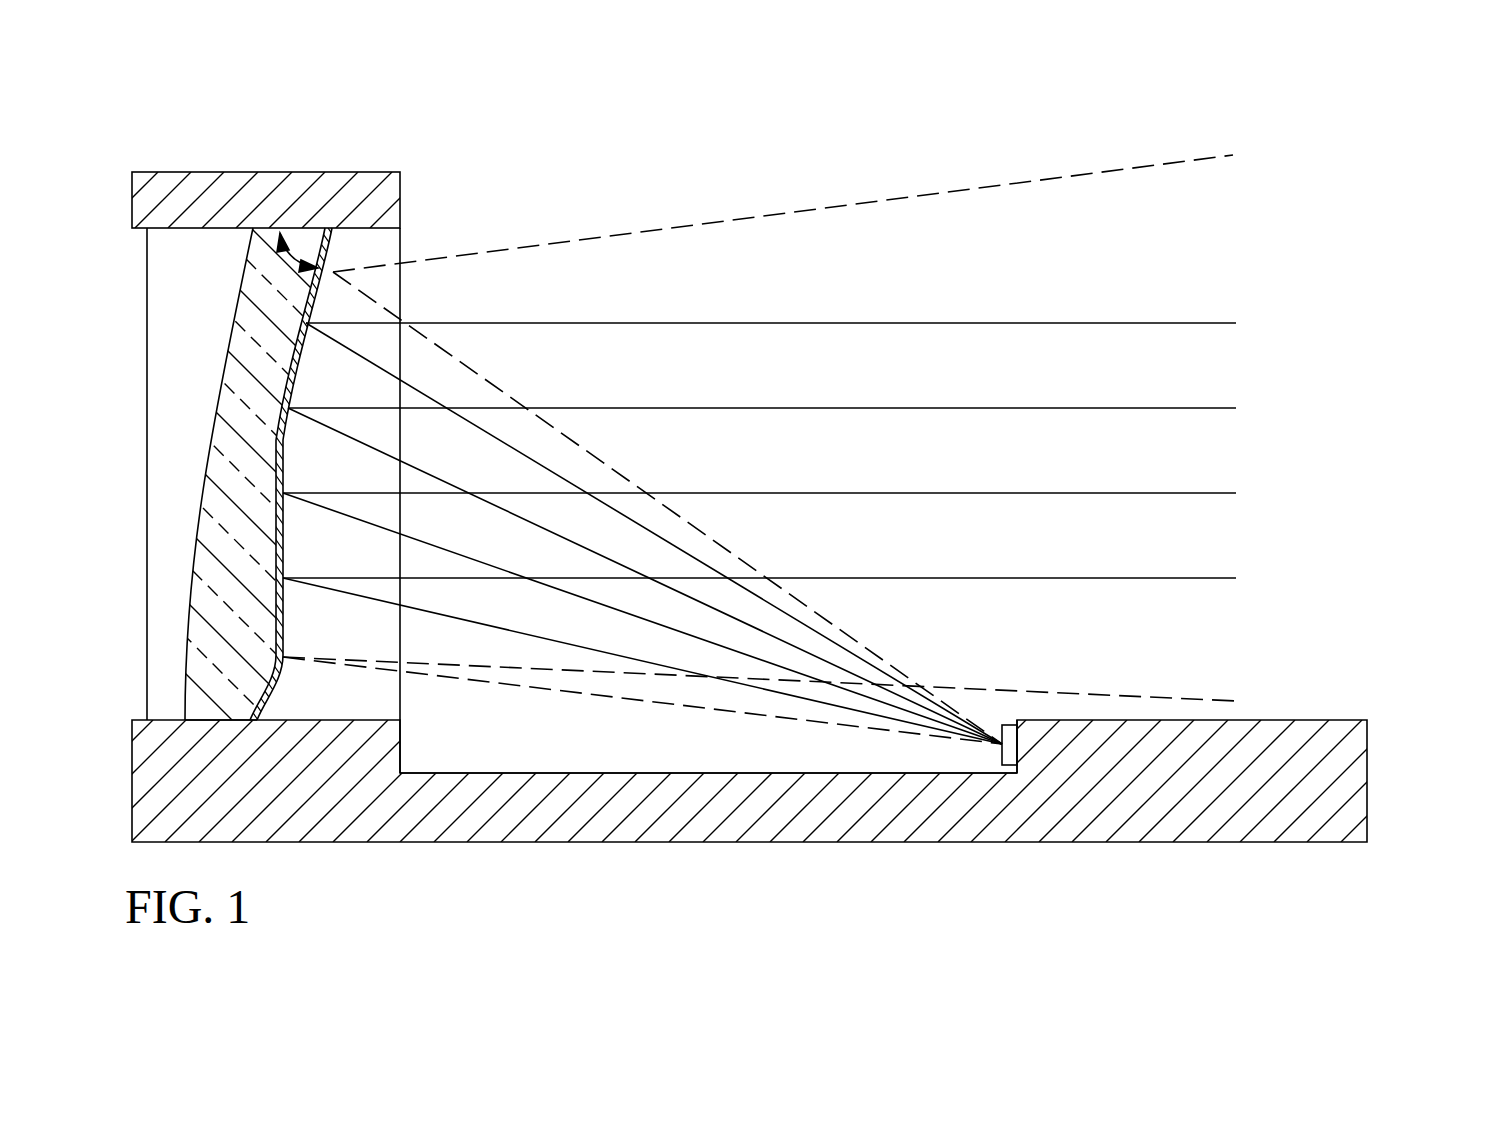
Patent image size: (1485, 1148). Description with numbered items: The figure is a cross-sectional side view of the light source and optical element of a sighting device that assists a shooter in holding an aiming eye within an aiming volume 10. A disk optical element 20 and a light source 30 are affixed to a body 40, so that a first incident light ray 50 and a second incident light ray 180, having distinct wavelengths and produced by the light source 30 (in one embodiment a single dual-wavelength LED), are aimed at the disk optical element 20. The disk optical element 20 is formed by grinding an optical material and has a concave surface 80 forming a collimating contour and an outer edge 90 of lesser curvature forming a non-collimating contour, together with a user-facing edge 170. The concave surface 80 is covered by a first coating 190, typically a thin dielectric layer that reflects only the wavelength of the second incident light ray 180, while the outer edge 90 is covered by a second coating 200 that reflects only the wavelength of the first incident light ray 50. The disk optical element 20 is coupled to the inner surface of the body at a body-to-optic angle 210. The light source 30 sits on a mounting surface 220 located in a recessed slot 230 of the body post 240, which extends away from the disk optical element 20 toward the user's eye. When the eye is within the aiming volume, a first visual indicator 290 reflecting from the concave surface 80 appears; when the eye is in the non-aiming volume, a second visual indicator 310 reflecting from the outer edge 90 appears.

The aiming volume 10 is at (418, 138).
The disk optical element 20 is at (302, 370).
The light source 30 is at (1017, 722).
The body 40 is at (790, 843).
The first incident light ray 50 is at (722, 550).
The concave surface 80 is at (277, 457).
The outer edge 90 is at (272, 673).
The user-facing edge 170 is at (265, 718).
The second incident light ray 180 is at (643, 524).
The first coating 190 is at (297, 393).
The second coating 200 is at (333, 257).
The body-to-optic angle 210 is at (302, 245).
The mounting surface 220 is at (1017, 757).
The recessed slot 230 is at (703, 755).
The body post 240 is at (1368, 766).
The first visual indicator 290 is at (1217, 323).
The second visual indicator 310 is at (1202, 157).